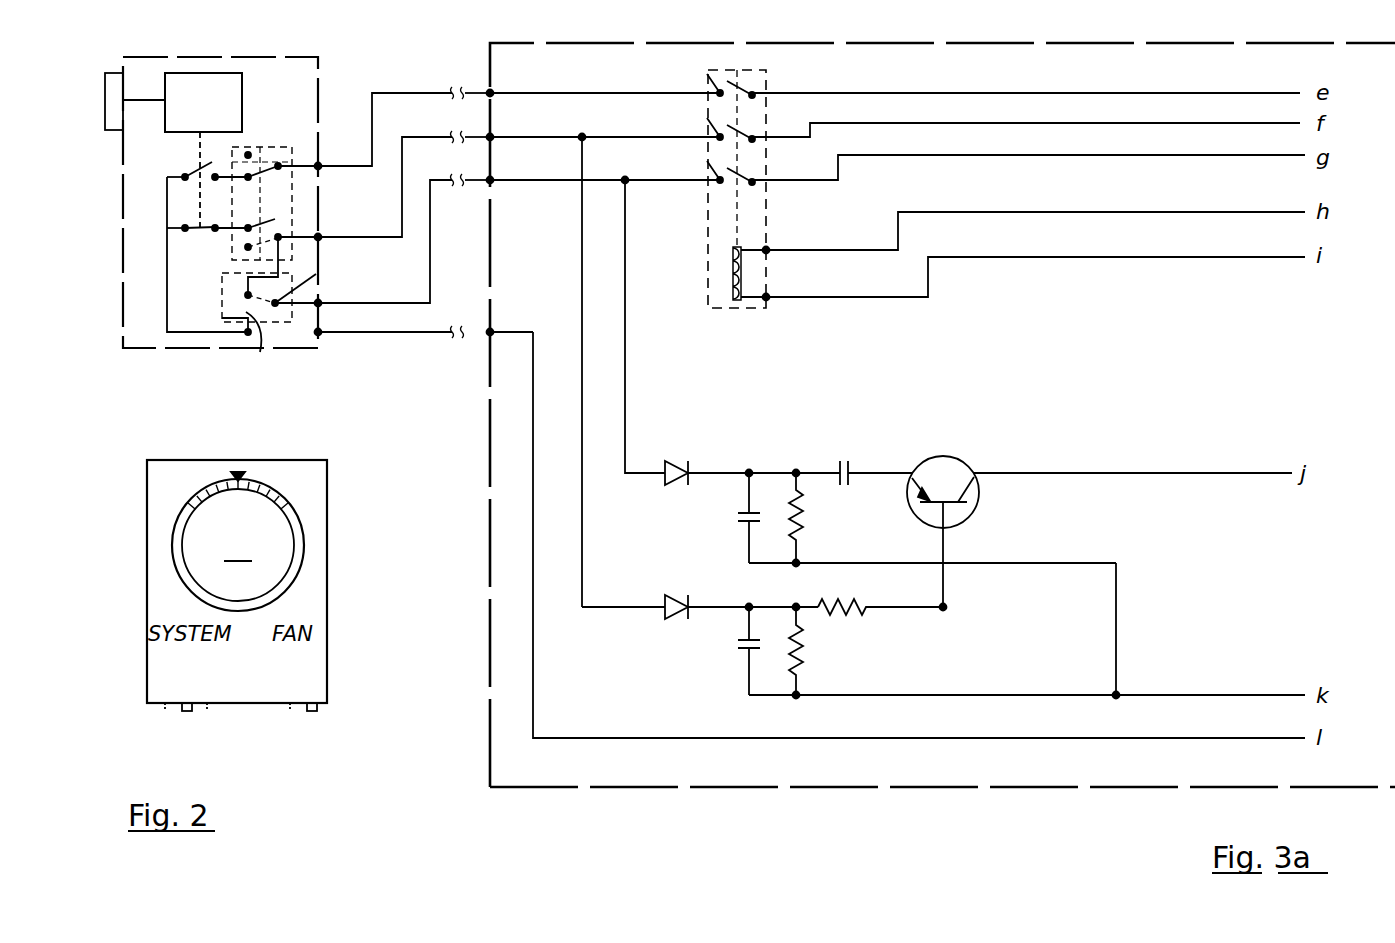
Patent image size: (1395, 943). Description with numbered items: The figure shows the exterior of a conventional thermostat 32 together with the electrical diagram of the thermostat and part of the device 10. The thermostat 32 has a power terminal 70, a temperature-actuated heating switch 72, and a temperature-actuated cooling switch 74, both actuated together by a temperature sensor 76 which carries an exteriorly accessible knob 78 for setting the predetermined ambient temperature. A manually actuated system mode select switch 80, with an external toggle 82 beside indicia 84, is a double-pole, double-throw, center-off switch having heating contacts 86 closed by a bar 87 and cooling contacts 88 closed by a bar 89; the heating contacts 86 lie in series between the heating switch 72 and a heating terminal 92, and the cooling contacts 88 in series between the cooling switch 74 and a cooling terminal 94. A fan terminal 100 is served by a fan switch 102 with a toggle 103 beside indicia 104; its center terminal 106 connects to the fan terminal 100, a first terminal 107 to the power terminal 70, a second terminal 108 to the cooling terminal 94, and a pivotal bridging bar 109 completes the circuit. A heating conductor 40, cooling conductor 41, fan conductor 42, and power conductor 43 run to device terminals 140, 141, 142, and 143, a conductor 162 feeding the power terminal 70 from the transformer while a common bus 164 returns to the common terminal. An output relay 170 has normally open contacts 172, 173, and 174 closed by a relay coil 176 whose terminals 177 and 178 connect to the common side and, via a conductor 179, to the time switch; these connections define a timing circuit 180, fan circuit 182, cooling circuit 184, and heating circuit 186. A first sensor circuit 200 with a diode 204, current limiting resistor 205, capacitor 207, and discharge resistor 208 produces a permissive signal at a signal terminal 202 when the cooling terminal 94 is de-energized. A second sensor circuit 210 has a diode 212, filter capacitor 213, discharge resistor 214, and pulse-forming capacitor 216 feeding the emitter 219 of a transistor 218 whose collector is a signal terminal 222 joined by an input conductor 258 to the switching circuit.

In FIG. 3A, the device 10 is at (895, 791).
In FIG. 2, the thermostat 32 is at (121, 232).
In FIG. 2, the heating conductor 40 is at (372, 108).
In FIG. 2, the cooling conductor 41 is at (379, 236).
In FIG. 2, the fan conductor 42 is at (432, 290).
In FIG. 2, the power conductor 43 is at (422, 332).
In FIG. 2, the power terminal 70 is at (318, 332).
In FIG. 2, the temperature-actuated heating switch 72 is at (192, 172).
In FIG. 2, the temperature-actuated cooling switch 74 is at (194, 232).
In FIG. 2, the temperature sensor 76 is at (218, 115).
In FIG. 2, the knob 78 is at (105, 92).
In FIG. 2, the system mode select switch 80 is at (262, 144).
In FIG. 2, the toggle 82 is at (187, 711).
In FIG. 2, the indicia 84 is at (150, 673).
In FIG. 2, the heating contacts 86 is at (280, 180).
In FIG. 2, the bar 87 is at (262, 160).
In FIG. 2, the cooling contacts 88 is at (275, 238).
In FIG. 2, the bar 89 is at (244, 240).
In FIG. 2, the heating terminal 92 is at (318, 166).
In FIG. 2, the cooling terminal 94 is at (318, 237).
In FIG. 2, the fan terminal 100 is at (318, 303).
In FIG. 2, the fan switch 102 is at (230, 324).
In FIG. 2, the toggle 103 is at (312, 711).
In FIG. 2, the indicia 104 is at (322, 673).
In FIG. 2, the center terminal 106 is at (316, 274).
In FIG. 2, the first terminal 107 is at (222, 318).
In FIG. 2, the second terminal 108 is at (246, 295).
In FIG. 2, the pivotal bridging bar 109 is at (258, 348).
In FIG. 3A, the terminal 140 is at (490, 93).
In FIG. 3A, the terminal 141 is at (490, 137).
In FIG. 3A, the terminal 142 is at (490, 180).
In FIG. 3A, the terminal 143 is at (490, 332).
In FIG. 3A, the conductor 162 is at (533, 402).
In FIG. 3A, the bus 164 is at (1178, 698).
In FIG. 3A, the output relay 170 is at (727, 313).
In FIG. 3A, the contacts 172 is at (748, 84).
In FIG. 3A, the contacts 173 is at (752, 128).
In FIG. 3A, the contacts 174 is at (752, 172).
In FIG. 3A, the relay coil 176 is at (730, 276).
In FIG. 3A, the terminal 177 is at (766, 250).
In FIG. 3A, the terminal 178 is at (766, 297).
In FIG. 3A, the conductor 179 is at (1196, 258).
In FIG. 3A, the timing circuit 180 is at (955, 304).
In FIG. 3A, the fan circuit 182 is at (466, 178).
In FIG. 3A, the cooling circuit 184 is at (435, 134).
In FIG. 3A, the heating circuit 186 is at (418, 92).
In FIG. 3A, the first sensor circuit 200 is at (943, 650).
In FIG. 3A, the signal terminal 202 is at (943, 608).
In FIG. 3A, the diode 204 is at (668, 610).
In FIG. 3A, the current limiting resistor 205 is at (844, 608).
In FIG. 3A, the capacitor 207 is at (742, 648).
In FIG. 3A, the capacitor discharge resistor 208 is at (808, 670).
In FIG. 3A, the second sensor circuit 210 is at (961, 536).
In FIG. 3A, the diode 212 is at (676, 470).
In FIG. 3A, the filter capacitor 213 is at (740, 512).
In FIG. 3A, the discharge resistor 214 is at (808, 526).
In FIG. 3A, the pulse-forming capacitor 216 is at (826, 466).
In FIG. 3A, the transistor 218 is at (974, 506).
In FIG. 3A, the emitter 219 is at (909, 472).
In FIG. 3A, the signal terminal 222 is at (975, 472).
In FIG. 3A, the input conductor 258 is at (1128, 476).